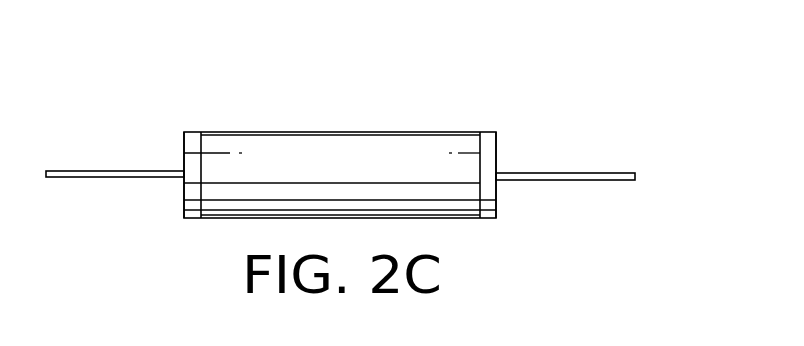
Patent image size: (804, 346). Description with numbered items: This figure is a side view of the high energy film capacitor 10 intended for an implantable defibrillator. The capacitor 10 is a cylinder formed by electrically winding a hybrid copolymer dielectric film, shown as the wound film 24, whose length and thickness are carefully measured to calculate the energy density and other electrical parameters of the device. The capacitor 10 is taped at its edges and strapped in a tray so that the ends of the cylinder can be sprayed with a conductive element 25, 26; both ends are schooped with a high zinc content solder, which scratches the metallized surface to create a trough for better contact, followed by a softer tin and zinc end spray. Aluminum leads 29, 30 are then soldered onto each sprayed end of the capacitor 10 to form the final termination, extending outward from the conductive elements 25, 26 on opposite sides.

The film capacitor 10 is at (362, 110).
The wound film 24 is at (298, 147).
The conductive element 25 is at (184, 148).
The conductive element 26 is at (487, 140).
The aluminum lead 29 is at (110, 177).
The aluminum lead 30 is at (558, 180).